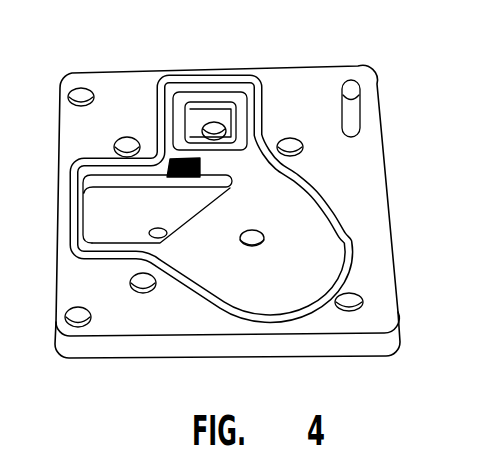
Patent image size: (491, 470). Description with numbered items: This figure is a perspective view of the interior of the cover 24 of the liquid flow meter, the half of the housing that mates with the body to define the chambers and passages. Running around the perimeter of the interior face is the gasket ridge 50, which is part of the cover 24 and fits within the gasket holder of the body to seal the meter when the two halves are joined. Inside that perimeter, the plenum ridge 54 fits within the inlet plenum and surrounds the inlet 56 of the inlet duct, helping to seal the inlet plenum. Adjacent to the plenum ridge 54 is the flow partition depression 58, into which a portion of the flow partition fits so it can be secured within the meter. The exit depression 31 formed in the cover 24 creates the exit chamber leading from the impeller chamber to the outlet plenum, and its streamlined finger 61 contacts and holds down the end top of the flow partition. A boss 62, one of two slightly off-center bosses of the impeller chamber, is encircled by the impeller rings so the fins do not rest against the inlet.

The cover half 24 is at (118, 70).
The gasket ridge 50 is at (167, 82).
The plenum ridge 54 is at (246, 75).
The inlet 56 is at (214, 127).
The flow partition depression 58 is at (136, 150).
The exit depression 31 is at (131, 222).
The streamlined finger 61 is at (158, 230).
The boss 62 is at (255, 232).